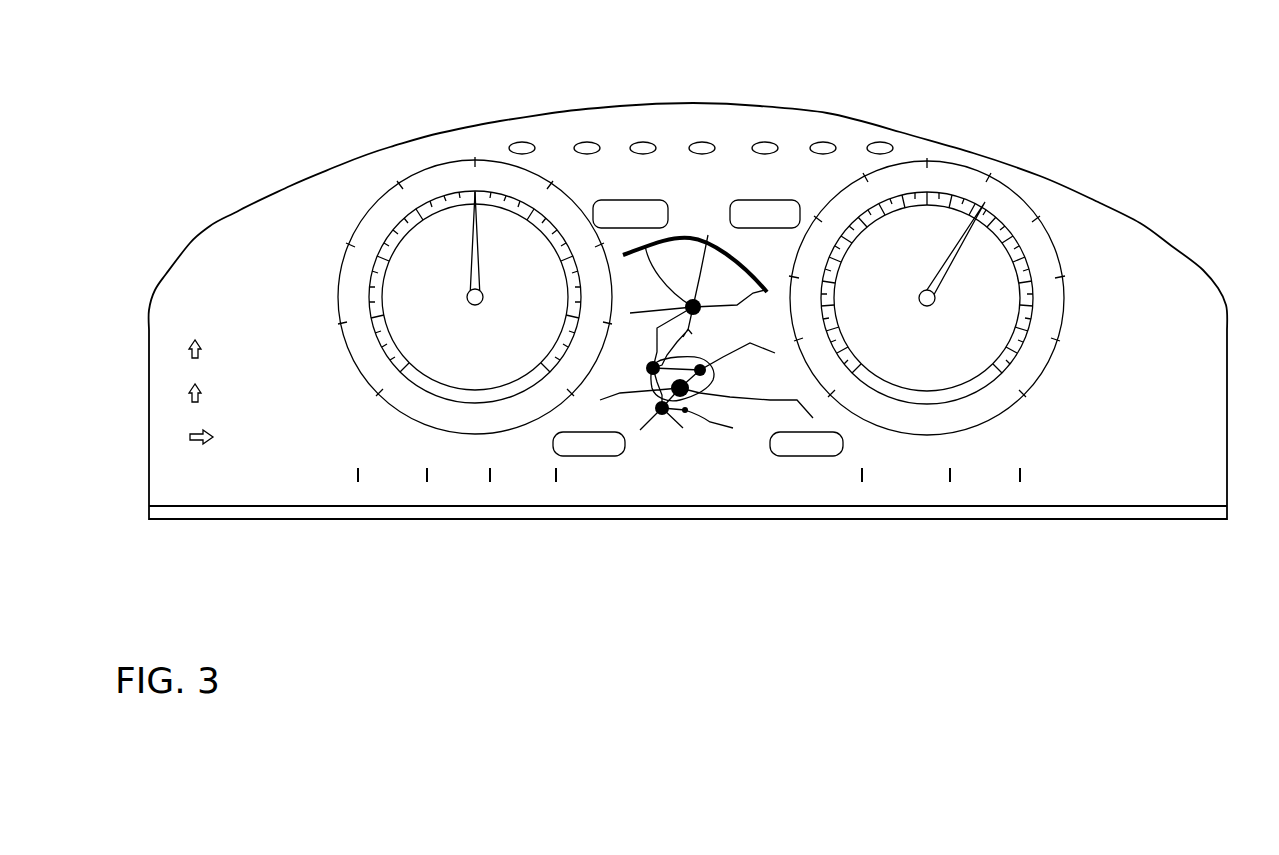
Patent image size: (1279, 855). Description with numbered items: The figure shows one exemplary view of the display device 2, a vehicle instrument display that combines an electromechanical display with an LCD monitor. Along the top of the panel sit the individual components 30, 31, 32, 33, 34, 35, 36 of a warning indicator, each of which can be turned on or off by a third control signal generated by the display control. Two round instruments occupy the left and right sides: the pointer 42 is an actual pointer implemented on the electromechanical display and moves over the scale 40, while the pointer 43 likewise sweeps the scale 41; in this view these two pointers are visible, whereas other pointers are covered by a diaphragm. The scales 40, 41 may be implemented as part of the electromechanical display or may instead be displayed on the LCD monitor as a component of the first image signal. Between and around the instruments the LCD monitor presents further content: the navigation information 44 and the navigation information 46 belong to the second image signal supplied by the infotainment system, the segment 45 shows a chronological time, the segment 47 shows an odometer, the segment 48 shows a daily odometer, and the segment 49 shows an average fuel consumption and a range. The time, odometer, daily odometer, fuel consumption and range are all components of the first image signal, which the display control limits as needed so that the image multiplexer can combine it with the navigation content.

The display device 2 is at (1113, 136).
The warning indicator component 30 is at (522, 148).
The warning indicator component 31 is at (587, 148).
The warning indicator component 32 is at (643, 148).
The warning indicator component 33 is at (702, 148).
The warning indicator component 34 is at (765, 148).
The warning indicator component 35 is at (823, 148).
The warning indicator component 36 is at (880, 148).
The scale 40 is at (443, 173).
The scale 41 is at (940, 167).
The pointer 42 is at (477, 265).
The pointer 43 is at (969, 229).
The navigation information 44 is at (245, 352).
The time segment 45 is at (502, 478).
The navigation information 46 is at (685, 410).
The odometer segment 47 is at (882, 478).
The daily odometer segment 48 is at (933, 430).
The fuel consumption and range segment 49 is at (1190, 377).